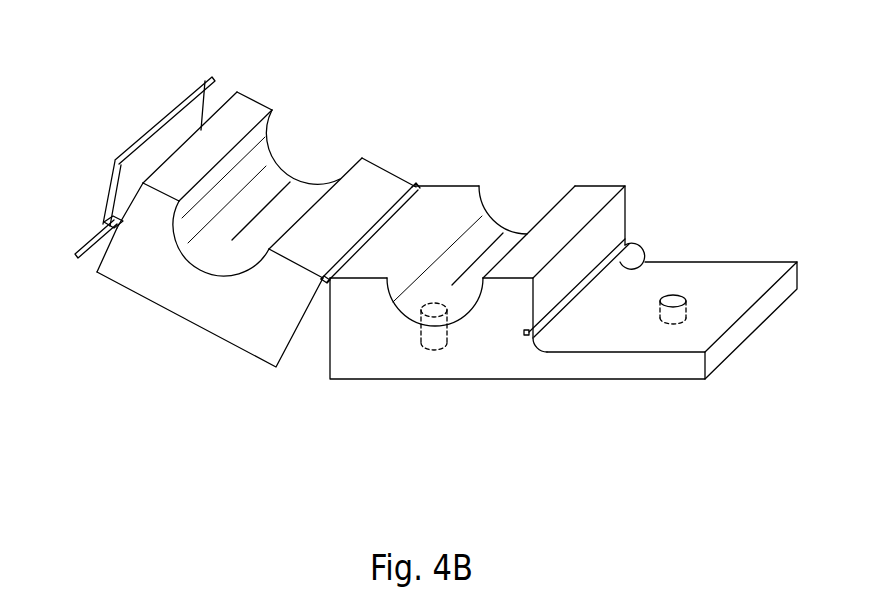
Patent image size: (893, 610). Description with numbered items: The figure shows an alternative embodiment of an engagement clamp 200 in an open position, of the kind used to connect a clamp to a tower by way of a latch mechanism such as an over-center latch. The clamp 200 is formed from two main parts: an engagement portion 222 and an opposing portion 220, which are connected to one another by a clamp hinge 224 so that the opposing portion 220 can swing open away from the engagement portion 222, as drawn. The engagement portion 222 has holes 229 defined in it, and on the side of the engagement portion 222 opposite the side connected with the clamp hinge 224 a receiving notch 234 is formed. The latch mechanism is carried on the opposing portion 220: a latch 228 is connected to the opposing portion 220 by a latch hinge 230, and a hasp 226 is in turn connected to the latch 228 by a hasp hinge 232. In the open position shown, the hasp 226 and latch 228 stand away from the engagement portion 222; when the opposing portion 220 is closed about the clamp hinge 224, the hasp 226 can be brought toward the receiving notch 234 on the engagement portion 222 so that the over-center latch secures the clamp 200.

The clamp 200 is at (607, 74).
The opposing portion 220 is at (220, 338).
The engagement portion 222 is at (740, 260).
The clamp hinge 224 is at (323, 284).
The hasp 226 is at (170, 113).
The latch 228 is at (77, 260).
The holes 229 is at (440, 344).
The latch hinge 230 is at (122, 228).
The hasp hinge 232 is at (100, 225).
The receiving notch 234 is at (642, 261).